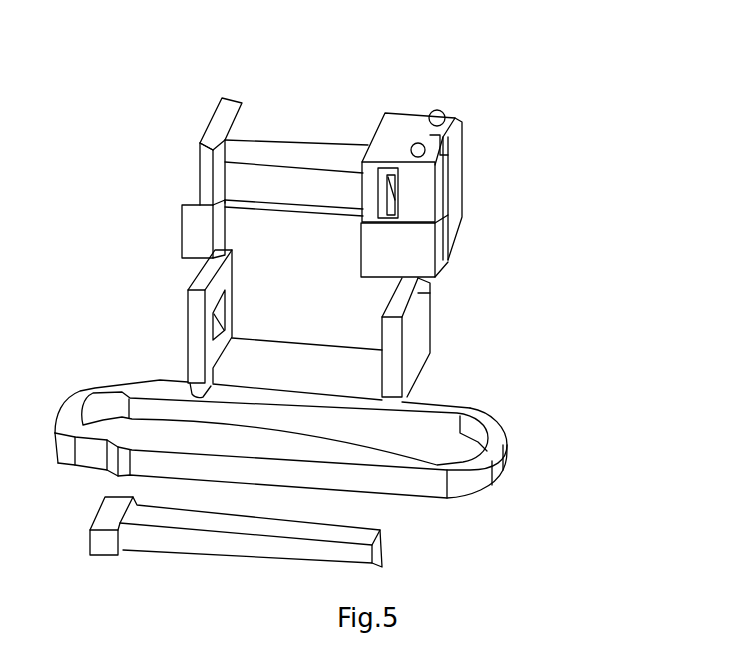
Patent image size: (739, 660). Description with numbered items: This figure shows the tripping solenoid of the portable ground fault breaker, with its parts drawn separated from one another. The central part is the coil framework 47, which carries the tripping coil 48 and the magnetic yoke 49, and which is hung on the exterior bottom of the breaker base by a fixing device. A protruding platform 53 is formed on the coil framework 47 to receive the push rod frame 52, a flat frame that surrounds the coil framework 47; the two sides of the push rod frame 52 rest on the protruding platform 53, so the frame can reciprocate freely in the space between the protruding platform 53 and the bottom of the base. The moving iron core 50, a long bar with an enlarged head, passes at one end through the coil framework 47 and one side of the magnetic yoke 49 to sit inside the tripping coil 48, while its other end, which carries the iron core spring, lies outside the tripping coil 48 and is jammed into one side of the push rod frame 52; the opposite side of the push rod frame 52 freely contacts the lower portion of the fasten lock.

The coil framework 47 is at (418, 193).
The tripping coil 48 is at (288, 178).
The magnetic yoke 49 is at (360, 373).
The moving iron core 50 is at (300, 558).
The push rod frame 52 is at (397, 482).
The protruding platform 53 is at (418, 229).